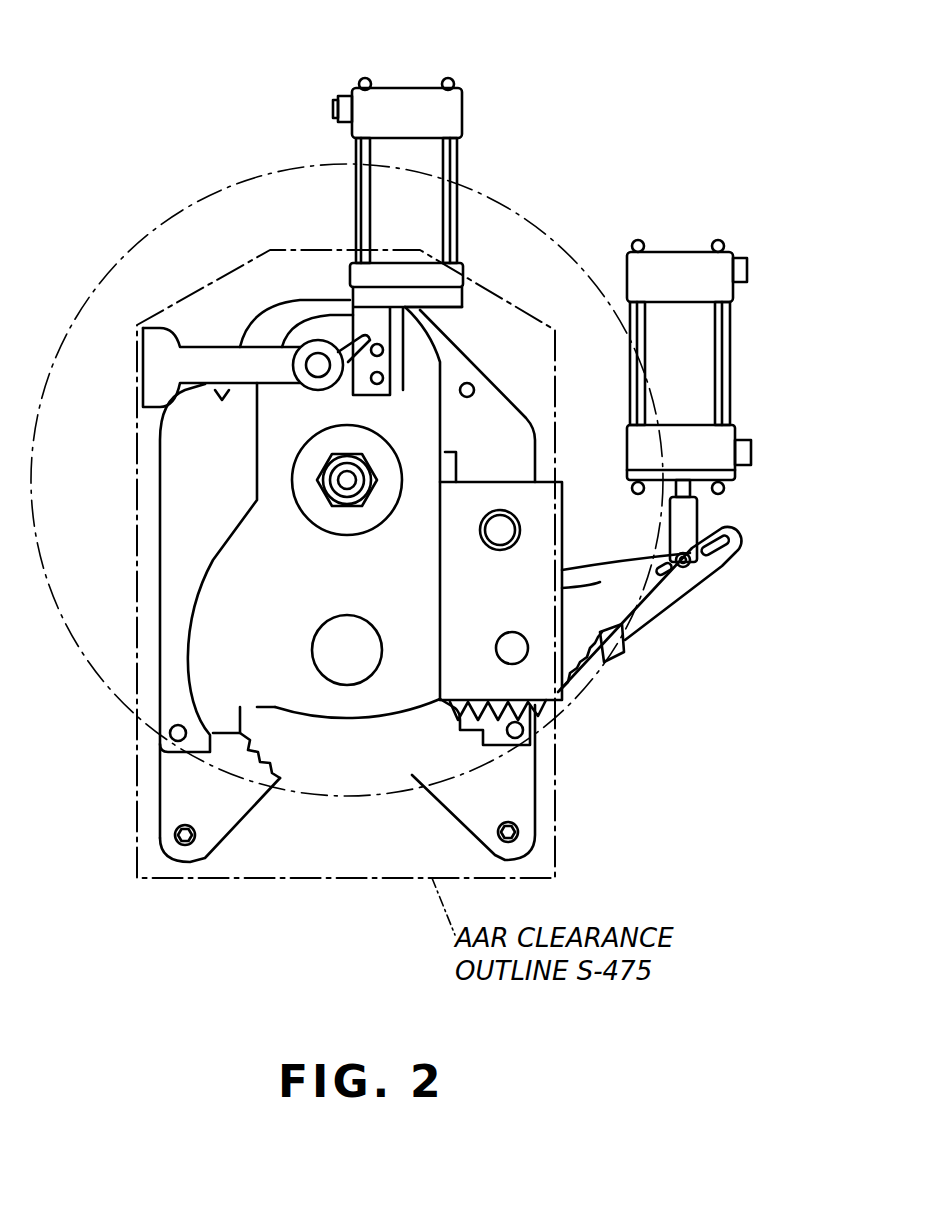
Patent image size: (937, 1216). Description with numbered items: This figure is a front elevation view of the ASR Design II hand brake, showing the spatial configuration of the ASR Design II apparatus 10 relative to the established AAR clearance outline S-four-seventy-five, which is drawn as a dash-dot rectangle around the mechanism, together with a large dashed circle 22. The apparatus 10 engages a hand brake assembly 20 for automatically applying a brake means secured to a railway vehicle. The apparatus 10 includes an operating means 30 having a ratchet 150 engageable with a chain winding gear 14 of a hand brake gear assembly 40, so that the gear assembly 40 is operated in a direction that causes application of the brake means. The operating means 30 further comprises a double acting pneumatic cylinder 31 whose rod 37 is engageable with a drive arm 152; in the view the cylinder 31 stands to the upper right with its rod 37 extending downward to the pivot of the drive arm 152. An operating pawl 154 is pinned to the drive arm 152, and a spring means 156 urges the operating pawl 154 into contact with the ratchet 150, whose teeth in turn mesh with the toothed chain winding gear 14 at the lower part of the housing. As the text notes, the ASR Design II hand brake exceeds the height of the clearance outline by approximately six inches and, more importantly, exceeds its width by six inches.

The ASR Design II apparatus 10 is at (648, 158).
The chain winding gear 14 is at (445, 758).
The hand brake assembly 20 is at (280, 66).
The wheel clearance circle 22 is at (118, 703).
The operating means 30 is at (752, 328).
The double acting pneumatic cylinder 31 is at (700, 375).
The rod 37 is at (684, 520).
The hand brake gear assembly 40 is at (355, 812).
The ratchet 150 is at (560, 703).
The drive arm 152 is at (703, 570).
The operating pawl 154 is at (613, 643).
The spring means 156 is at (620, 625).